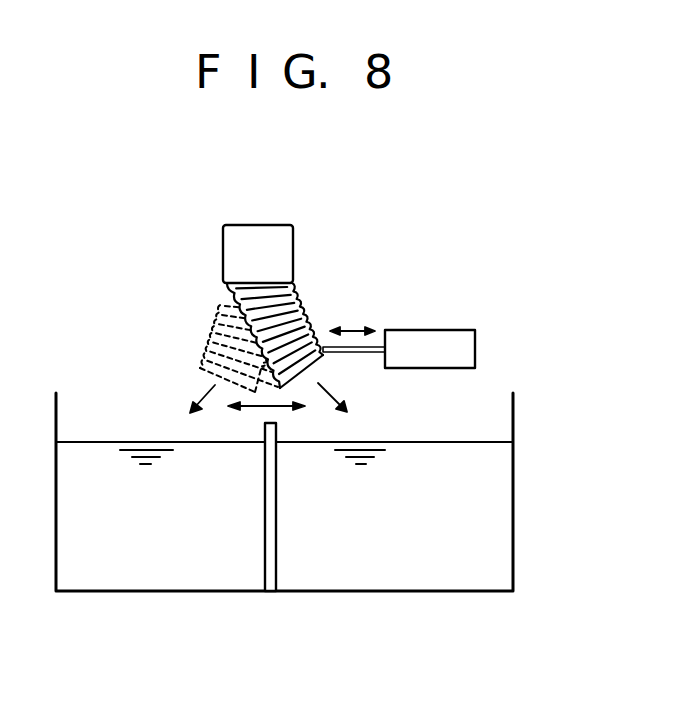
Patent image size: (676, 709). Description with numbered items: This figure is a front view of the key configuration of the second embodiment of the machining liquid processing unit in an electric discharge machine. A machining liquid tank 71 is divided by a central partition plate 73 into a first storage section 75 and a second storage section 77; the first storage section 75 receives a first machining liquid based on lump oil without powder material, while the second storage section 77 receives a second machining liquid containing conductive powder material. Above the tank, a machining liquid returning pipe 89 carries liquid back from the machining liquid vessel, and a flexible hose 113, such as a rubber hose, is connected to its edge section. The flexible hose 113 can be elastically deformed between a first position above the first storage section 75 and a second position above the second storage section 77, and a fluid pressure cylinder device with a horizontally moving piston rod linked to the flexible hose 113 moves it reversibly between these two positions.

The machining liquid tank 71 is at (514, 500).
The central partition plate 73 is at (272, 506).
The first storage section 75 is at (228, 568).
The second storage section 77 is at (383, 572).
The machining liquid returning pipe 89 is at (273, 247).
The flexible hose 113 is at (308, 318).